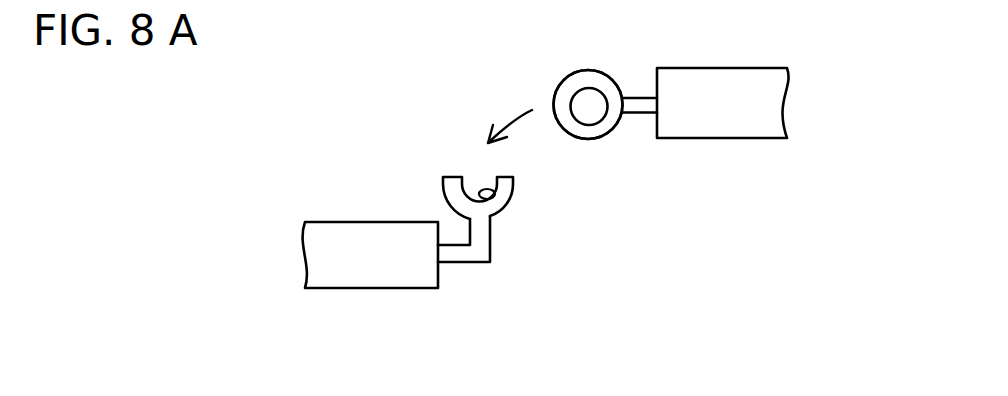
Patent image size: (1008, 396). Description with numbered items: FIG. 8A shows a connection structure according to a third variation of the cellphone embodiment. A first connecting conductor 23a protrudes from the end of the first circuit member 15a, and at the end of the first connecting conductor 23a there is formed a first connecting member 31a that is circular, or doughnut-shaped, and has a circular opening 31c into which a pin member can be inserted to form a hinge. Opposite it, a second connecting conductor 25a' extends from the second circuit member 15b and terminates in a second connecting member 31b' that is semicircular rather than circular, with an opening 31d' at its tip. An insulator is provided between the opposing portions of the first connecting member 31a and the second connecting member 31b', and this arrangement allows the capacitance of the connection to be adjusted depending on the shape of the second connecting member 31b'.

The first circuit member 15a is at (768, 108).
The second lead wire 15b is at (323, 258).
The first connecting conductor 23a is at (597, 80).
The first connecting member 31a is at (555, 95).
The circular opening 31c is at (590, 117).
The second connecting member 31b' is at (413, 193).
The engaging recess 31d' is at (547, 216).
The connecting portion 25a' is at (520, 261).